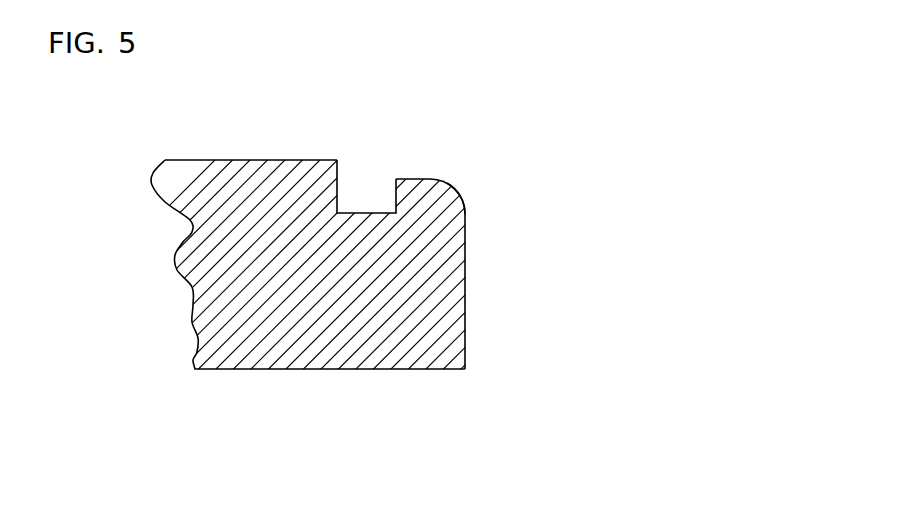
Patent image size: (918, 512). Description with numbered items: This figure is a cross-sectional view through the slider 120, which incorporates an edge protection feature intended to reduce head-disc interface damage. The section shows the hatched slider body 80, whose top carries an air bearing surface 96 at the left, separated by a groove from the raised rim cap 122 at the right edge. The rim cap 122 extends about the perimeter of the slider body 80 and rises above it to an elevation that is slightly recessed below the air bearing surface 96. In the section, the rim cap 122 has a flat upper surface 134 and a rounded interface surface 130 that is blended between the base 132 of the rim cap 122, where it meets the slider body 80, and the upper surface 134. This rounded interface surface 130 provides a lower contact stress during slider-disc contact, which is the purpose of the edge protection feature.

The air bearing surface 96 is at (223, 160).
The slider body 80 is at (357, 213).
The upper surface of rim cap 134 is at (411, 179).
The rounded interface surface 130 is at (447, 183).
The rim cap 122 is at (464, 190).
The base of rim cap 132 is at (465, 212).
The slider 120 is at (450, 285).